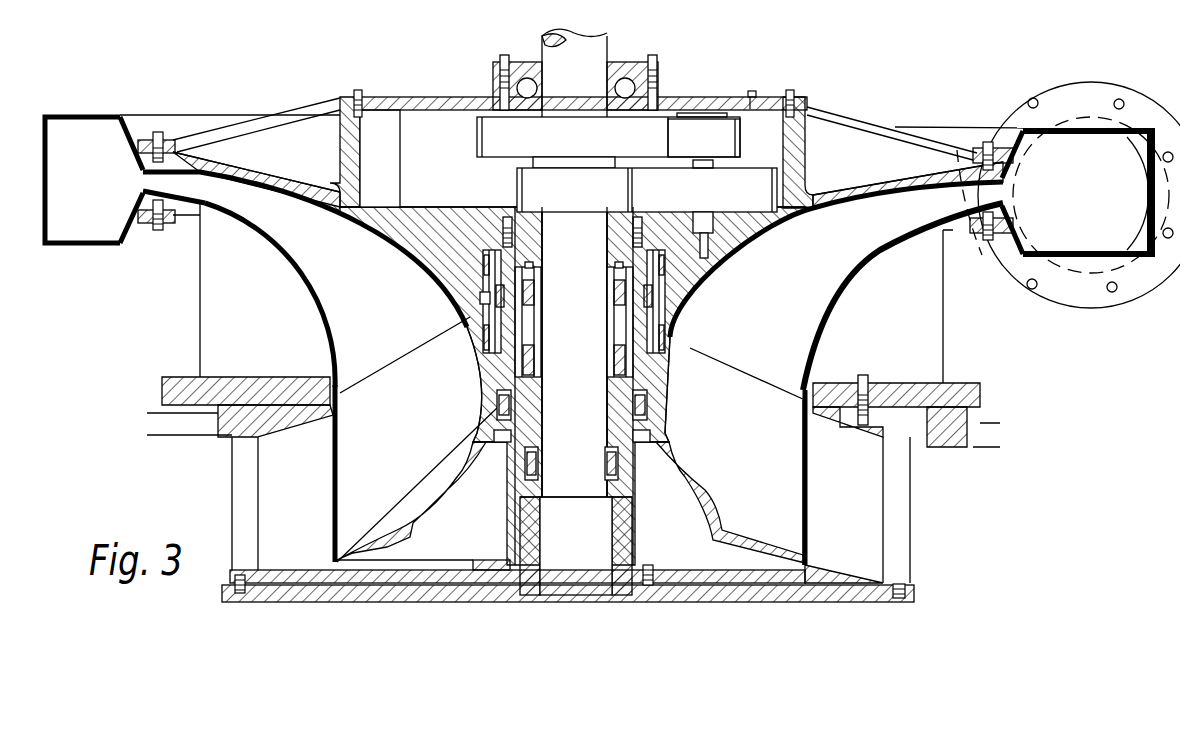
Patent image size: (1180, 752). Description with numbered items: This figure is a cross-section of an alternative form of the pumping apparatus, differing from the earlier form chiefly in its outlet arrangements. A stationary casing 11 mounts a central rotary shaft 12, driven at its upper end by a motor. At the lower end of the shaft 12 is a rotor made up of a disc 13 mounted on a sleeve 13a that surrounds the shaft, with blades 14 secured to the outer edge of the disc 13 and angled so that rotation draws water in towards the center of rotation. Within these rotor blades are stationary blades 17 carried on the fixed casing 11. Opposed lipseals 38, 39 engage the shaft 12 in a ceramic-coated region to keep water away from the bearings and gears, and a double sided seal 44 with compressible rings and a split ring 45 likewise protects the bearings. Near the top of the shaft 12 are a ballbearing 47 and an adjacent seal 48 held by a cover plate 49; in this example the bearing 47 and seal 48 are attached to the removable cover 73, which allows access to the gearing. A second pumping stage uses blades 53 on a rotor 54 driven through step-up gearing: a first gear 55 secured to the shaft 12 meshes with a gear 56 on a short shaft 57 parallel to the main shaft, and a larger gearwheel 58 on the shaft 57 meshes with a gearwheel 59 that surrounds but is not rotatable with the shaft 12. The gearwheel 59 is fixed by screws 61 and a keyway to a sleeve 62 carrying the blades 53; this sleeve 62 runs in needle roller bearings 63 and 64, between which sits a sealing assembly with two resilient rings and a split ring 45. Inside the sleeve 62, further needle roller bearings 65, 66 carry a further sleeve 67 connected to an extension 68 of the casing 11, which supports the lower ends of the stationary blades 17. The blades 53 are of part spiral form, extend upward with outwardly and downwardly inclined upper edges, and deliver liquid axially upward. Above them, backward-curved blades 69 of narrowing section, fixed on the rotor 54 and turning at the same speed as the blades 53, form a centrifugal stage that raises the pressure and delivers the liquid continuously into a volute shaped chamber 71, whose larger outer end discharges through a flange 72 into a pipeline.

The stationary casing 11 is at (983, 415).
The central rotary shaft 12 is at (570, 587).
The disc 13 is at (672, 601).
The sleeve 13a is at (620, 537).
The blades 14 is at (897, 537).
The stationary blades 17 is at (873, 510).
The lipseal 38 is at (657, 402).
The lipseal 39 is at (667, 440).
The double sided seal 44 is at (480, 298).
The split ring 45 is at (500, 304).
The ballbearing 47 is at (527, 64).
The seal 48 is at (612, 60).
The cover plate 49 is at (636, 62).
The blades 53 is at (710, 362).
The rotor 54 is at (713, 523).
The first gear 55 is at (653, 130).
The gear 56 is at (740, 135).
The short shaft 57 is at (718, 258).
The larger gearwheel 58 is at (787, 214).
The gearwheel 59 is at (525, 182).
The screws 61 is at (510, 215).
The sleeve 62 is at (490, 275).
The needle roller bearing 63 is at (480, 257).
The needle roller bearing 64 is at (482, 333).
The needle roller bearing 65 is at (622, 306).
The needle roller bearing 66 is at (625, 357).
The sleeve 67 is at (613, 415).
The extension 68 is at (760, 585).
The blades 69 is at (860, 253).
The volute shaped chamber 71 is at (1052, 232).
The flange 72 is at (1013, 103).
The removable cover 73 is at (410, 98).